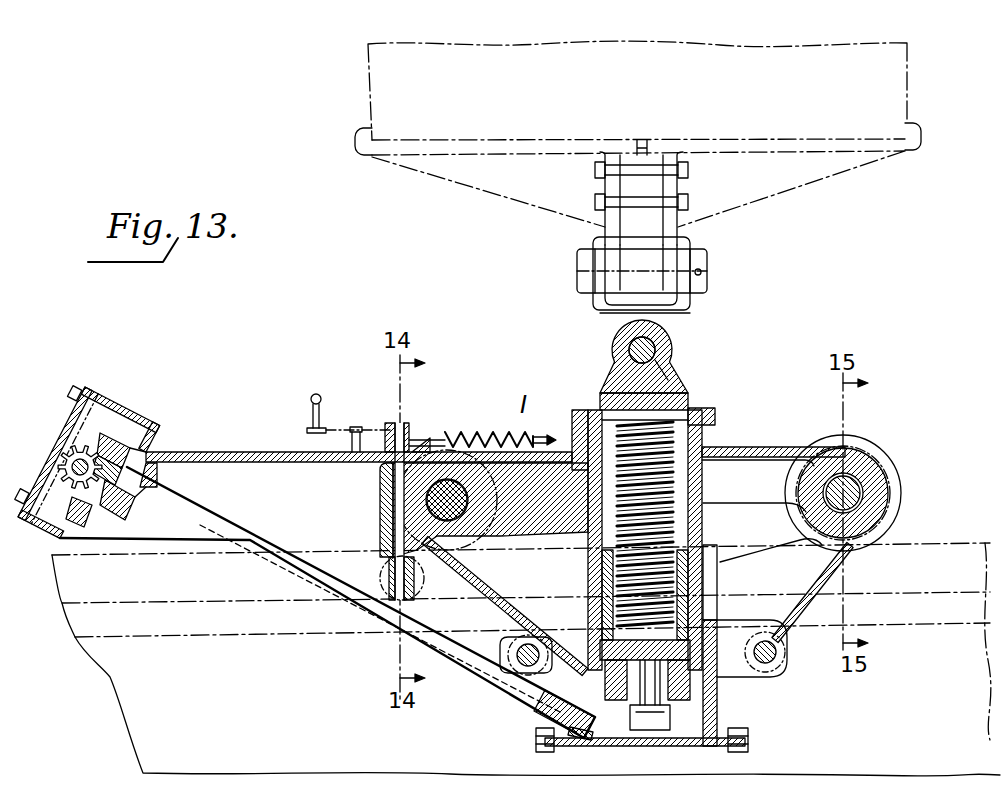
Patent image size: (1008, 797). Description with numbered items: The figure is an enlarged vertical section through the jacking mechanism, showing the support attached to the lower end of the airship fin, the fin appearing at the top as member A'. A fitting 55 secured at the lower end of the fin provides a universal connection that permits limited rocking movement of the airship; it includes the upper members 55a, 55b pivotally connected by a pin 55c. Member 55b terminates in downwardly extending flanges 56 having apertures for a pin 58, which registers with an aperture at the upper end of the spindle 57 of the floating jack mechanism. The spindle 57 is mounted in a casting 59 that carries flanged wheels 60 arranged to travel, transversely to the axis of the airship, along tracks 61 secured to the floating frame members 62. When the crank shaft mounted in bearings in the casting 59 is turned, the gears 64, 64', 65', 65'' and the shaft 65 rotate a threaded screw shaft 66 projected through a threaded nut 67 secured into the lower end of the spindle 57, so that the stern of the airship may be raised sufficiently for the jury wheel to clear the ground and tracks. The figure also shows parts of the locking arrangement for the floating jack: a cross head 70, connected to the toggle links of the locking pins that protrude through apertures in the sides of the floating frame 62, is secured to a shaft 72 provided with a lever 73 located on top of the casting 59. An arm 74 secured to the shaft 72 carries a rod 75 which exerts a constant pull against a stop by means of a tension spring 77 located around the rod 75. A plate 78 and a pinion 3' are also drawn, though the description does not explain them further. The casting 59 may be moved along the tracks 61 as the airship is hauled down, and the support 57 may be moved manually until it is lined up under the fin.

The vehicle body / supported member A' is at (637, 77).
The fitting 55 is at (830, 140).
The upper member 55a is at (655, 234).
The upper member 55b is at (683, 304).
The pin 55c is at (578, 281).
The downwardly extending flanges 56 is at (673, 325).
The spindle 57 is at (692, 401).
The pin 58 is at (652, 353).
The casting 59 is at (763, 443).
The flanged wheels 60 is at (890, 458).
The tracks 61 is at (923, 538).
The floating frame members 62 is at (122, 680).
The gear 64 is at (82, 461).
The gear 64' is at (97, 459).
The shaft 65 is at (327, 602).
The gear 65' is at (641, 732).
The gear 65'' is at (747, 645).
The threaded screw shaft 66 is at (703, 535).
The threaded nut 67 is at (600, 590).
The cross head 70 is at (412, 580).
The shaft 72 is at (407, 425).
The lever 73 is at (323, 402).
The arm 74 is at (387, 448).
The rod 75 is at (443, 437).
The tension spring 77 is at (488, 443).
The frame plate 78 is at (320, 452).
The pinion 3' is at (52, 467).